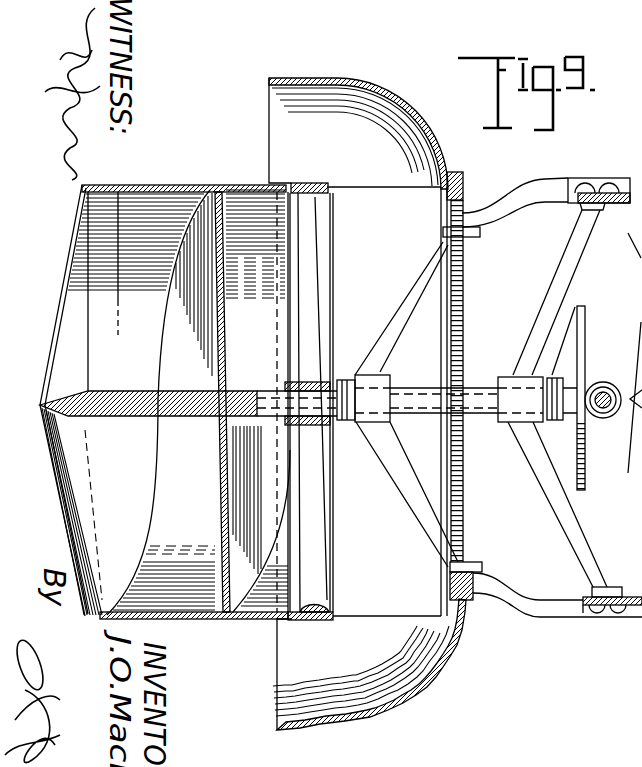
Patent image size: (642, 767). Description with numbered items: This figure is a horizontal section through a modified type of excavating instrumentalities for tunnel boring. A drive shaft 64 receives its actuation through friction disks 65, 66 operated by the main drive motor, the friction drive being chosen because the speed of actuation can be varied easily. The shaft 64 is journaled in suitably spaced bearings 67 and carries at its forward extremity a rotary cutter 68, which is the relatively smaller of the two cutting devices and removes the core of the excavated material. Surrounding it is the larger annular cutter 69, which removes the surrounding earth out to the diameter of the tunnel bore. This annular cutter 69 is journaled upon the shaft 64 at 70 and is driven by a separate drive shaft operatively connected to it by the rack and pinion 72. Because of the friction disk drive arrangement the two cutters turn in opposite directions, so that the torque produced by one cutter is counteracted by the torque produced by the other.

The drive shaft 64 is at (414, 415).
The friction disk 65 is at (603, 341).
The friction disk 66 is at (601, 416).
The bearings 67 is at (378, 405).
The rotary cutter 68 is at (207, 168).
The annular cutter 69 is at (397, 137).
The journal 70 is at (299, 381).
The rack and pinion 72 is at (457, 321).